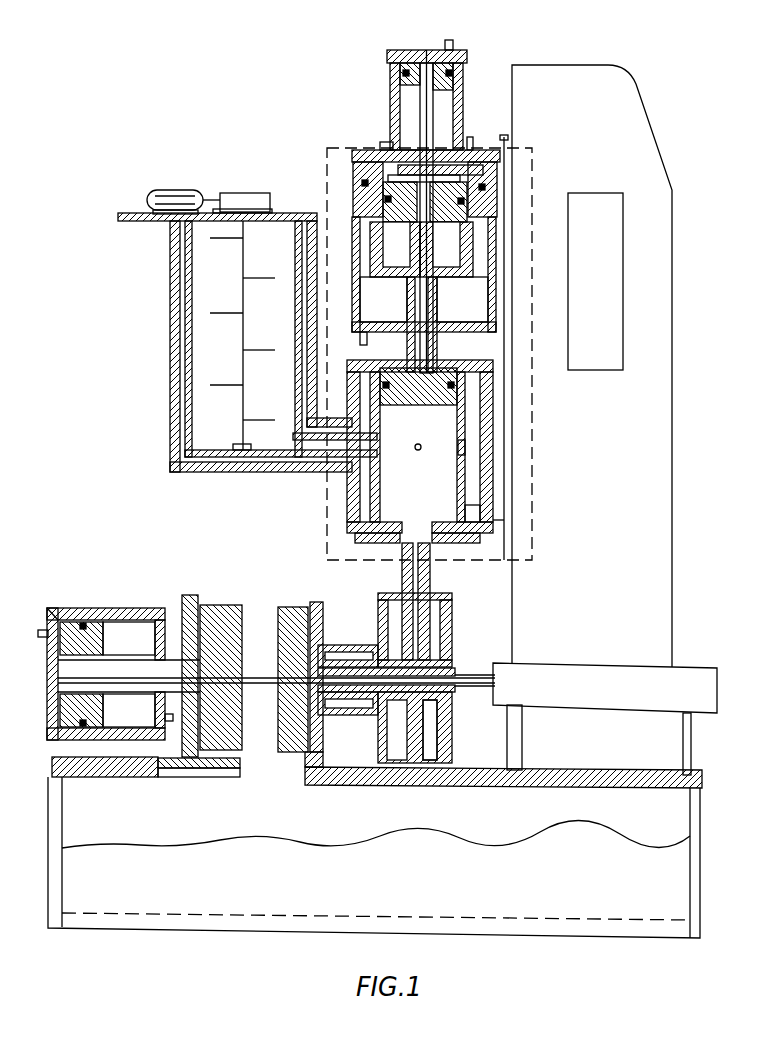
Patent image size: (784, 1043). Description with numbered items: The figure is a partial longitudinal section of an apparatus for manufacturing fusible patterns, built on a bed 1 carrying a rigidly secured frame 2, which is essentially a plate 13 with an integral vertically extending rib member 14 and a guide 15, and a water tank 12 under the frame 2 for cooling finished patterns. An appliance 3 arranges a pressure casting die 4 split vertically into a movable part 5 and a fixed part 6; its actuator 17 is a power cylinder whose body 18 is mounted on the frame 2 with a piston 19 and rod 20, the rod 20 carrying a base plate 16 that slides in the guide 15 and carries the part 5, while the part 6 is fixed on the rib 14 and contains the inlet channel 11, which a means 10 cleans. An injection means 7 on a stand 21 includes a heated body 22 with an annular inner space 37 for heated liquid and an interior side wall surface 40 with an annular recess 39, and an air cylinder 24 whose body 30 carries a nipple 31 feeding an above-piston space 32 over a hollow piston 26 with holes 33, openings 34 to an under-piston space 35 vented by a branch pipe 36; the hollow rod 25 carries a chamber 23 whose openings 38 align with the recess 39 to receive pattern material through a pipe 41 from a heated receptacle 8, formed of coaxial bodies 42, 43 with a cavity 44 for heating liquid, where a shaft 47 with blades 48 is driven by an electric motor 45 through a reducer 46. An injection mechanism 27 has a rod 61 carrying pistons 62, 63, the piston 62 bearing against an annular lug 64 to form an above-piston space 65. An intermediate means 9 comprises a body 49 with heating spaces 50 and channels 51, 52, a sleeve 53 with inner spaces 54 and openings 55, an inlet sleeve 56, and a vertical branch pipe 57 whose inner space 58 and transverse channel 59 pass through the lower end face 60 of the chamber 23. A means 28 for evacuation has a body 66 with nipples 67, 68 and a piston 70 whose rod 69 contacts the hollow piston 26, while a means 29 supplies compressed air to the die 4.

The bed 1 is at (48, 798).
The frame 2 is at (50, 762).
The appliance for arranging the pressure casting die 3 is at (104, 649).
The pressure casting die 4 is at (261, 661).
The movable die part 5 is at (225, 648).
The fixed die part 6 is at (280, 716).
The injection means 7 is at (532, 278).
The heated receptacle 8 is at (170, 245).
The intermediate means 9 is at (452, 630).
The means for cleaning the inlet channel 10 is at (590, 663).
The inlet channel 11 is at (300, 683).
The water tank 12 is at (92, 820).
The plate 13 is at (462, 786).
The rib member 14 is at (286, 605).
The guide 15 is at (218, 778).
The base plate 16 is at (190, 595).
The actuator 17 is at (118, 608).
The cylinder body 18 is at (55, 607).
The piston 19 is at (100, 640).
The piston rod 20 is at (100, 700).
The stand 21 is at (636, 140).
The heated body 22 is at (347, 521).
The chamber 23 is at (383, 540).
The air cylinder 24 is at (350, 150).
The hollow rod 25 is at (408, 308).
The hollow piston 26 is at (500, 152).
The injection mechanism 27 is at (437, 359).
The evacuating means 28 is at (387, 74).
The fluid supplying means 29 is at (493, 675).
The air cylinder body 30 is at (352, 200).
The nipple 31 is at (470, 137).
The above-piston space 32 is at (377, 162).
The holes 33 is at (470, 168).
The openings 34 is at (448, 282).
The under-piston space 35 is at (367, 285).
The branch pipe 36 is at (360, 345).
The annular inner space 37 is at (370, 495).
The openings 38 is at (422, 452).
The annular recess 39 is at (465, 447).
The interior side wall surface 40 is at (465, 475).
The pipe 41 is at (292, 460).
The inner cylindrical body 42 is at (192, 292).
The outer cylindrical body 43 is at (170, 400).
The cavity 44 is at (170, 310).
The electric motor 45 is at (173, 190).
The reducer 46 is at (242, 193).
The shaft 47 is at (246, 336).
The blades 48 is at (214, 385).
The body of intermediate means 49 is at (452, 742).
The inner spaces 50 is at (452, 615).
The vertical channel 51 is at (395, 615).
The horizontal channel 52 is at (372, 660).
The sleeve 53 is at (365, 715).
The inner spaces of sleeve 54 is at (340, 708).
The openings 55 is at (437, 710).
The inlet sleeve 56 is at (318, 672).
The vertical branch pipe 57 is at (430, 578).
The inner space of branch pipe 58 is at (402, 578).
The transverse channel 59 is at (445, 546).
The lower end face 60 is at (447, 522).
The rod 61 is at (426, 242).
The piston 62 is at (395, 229).
The piston 63 is at (440, 405).
The annular lug 64 is at (486, 187).
The above-piston space 65 is at (400, 175).
The body of evacuating cylinder 66 is at (392, 107).
The nipple 67 is at (448, 40).
The nipple 68 is at (386, 142).
The rod 69 is at (420, 100).
The piston 70 is at (463, 88).